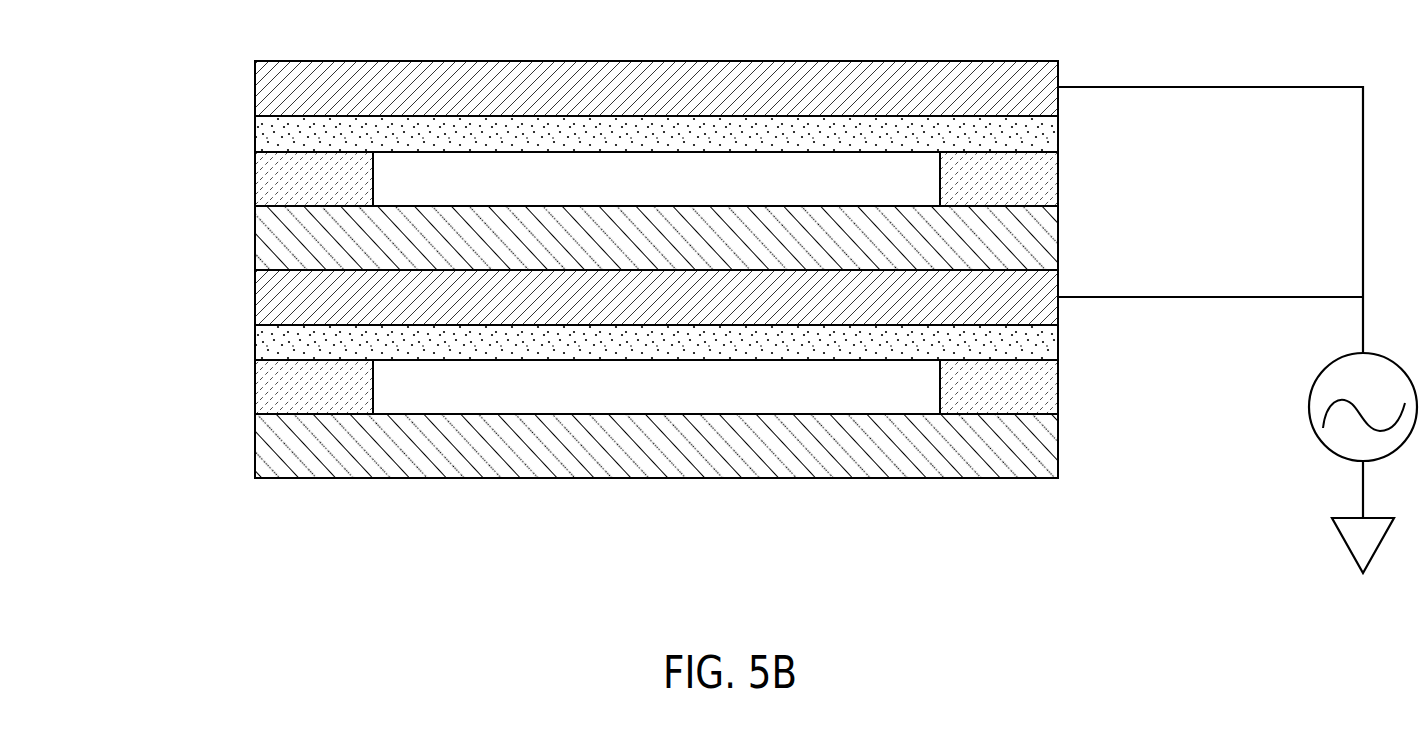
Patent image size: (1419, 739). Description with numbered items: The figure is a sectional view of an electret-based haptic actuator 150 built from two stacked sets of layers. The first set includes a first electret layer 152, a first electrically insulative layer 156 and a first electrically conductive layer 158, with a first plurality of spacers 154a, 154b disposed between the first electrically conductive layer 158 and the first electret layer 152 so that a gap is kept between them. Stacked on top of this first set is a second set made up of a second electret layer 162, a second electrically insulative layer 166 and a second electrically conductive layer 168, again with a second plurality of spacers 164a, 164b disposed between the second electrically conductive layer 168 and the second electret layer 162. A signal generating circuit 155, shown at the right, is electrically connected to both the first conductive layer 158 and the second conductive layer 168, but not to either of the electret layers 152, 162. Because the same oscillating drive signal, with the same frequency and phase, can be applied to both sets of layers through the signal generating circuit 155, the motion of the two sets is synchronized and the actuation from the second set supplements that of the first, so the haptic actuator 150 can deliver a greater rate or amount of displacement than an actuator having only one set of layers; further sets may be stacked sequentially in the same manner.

The haptic actuator 150 is at (138, 472).
The first electret layer 152 is at (265, 446).
The first spacer 154a is at (265, 386).
The first spacer 154b is at (1050, 393).
The signal generating circuit 155 is at (1318, 375).
The first electrically insulative layer 156 is at (263, 348).
The first electrically conductive layer 158 is at (263, 299).
The second electret layer 162 is at (265, 234).
The second spacer 164a is at (265, 181).
The second spacer 164b is at (1048, 180).
The second electrically insulative layer 166 is at (263, 134).
The second electrically conductive layer 168 is at (263, 85).